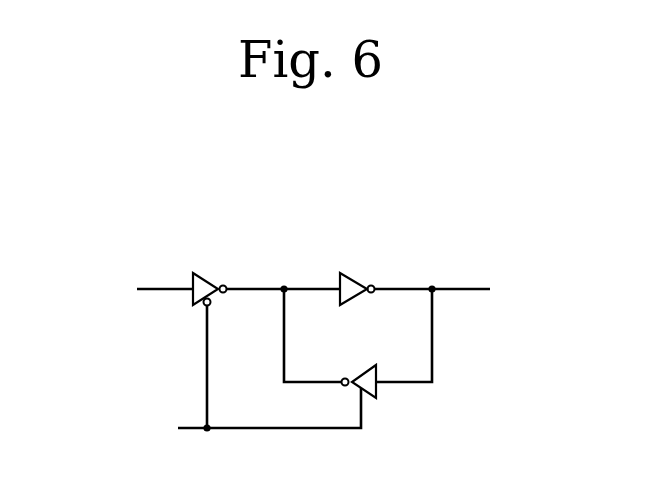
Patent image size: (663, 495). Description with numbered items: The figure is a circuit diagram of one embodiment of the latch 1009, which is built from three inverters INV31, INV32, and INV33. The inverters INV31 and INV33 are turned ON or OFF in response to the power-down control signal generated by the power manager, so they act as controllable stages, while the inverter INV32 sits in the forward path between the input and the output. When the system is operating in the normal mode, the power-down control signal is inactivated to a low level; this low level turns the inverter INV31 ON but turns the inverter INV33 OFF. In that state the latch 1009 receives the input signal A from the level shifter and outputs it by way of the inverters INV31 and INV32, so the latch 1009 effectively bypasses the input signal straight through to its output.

The latch 1009 is at (129, 217).
The inverter INV31 is at (213, 275).
The inverter INV32 is at (357, 272).
The inverter INV33 is at (379, 389).